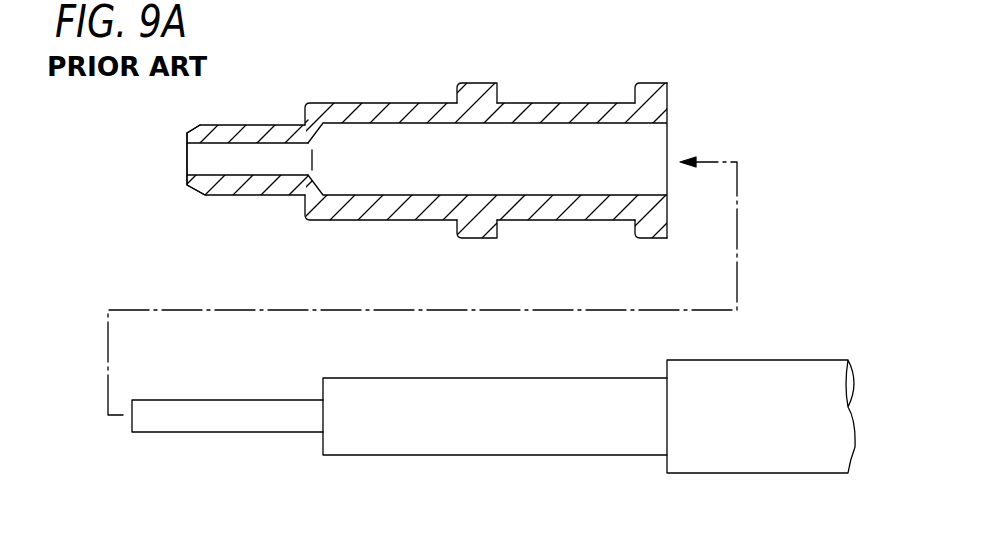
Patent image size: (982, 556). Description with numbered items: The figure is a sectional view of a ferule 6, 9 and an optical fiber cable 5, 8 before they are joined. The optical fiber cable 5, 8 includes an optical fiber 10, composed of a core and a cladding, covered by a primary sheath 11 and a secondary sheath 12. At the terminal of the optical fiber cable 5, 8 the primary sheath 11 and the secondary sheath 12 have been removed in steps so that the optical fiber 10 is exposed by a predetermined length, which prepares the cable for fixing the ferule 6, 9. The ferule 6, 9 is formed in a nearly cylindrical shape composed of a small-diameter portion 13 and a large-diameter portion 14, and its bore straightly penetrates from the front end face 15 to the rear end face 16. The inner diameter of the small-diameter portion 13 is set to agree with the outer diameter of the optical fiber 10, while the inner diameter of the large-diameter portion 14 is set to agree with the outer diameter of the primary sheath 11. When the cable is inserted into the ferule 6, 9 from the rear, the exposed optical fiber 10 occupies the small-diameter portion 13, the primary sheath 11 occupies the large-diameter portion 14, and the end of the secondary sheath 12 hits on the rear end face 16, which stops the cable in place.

The ferule 6 is at (477, 144).
The ferule 9 is at (477, 175).
The optical fiber cable 5 is at (493, 400).
The optical fiber cable 8 is at (493, 427).
The optical fiber 10 is at (226, 400).
The primary sheath 11 is at (563, 378).
The secondary sheath 12 is at (787, 458).
The small-diameter portion 13 is at (253, 197).
The large-diameter portion 14 is at (396, 221).
The front end face 15 is at (186, 186).
The rear end face 16 is at (668, 91).